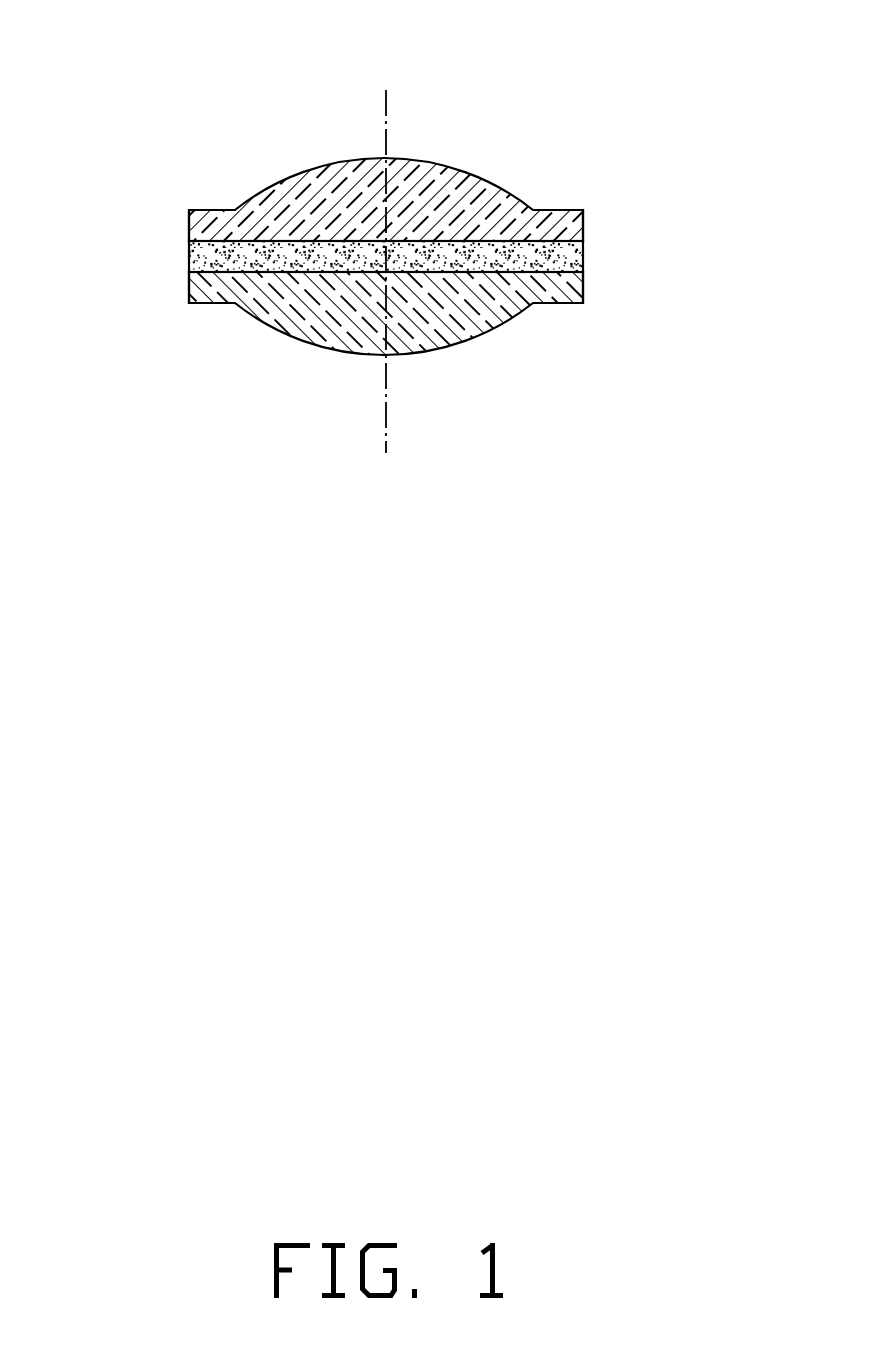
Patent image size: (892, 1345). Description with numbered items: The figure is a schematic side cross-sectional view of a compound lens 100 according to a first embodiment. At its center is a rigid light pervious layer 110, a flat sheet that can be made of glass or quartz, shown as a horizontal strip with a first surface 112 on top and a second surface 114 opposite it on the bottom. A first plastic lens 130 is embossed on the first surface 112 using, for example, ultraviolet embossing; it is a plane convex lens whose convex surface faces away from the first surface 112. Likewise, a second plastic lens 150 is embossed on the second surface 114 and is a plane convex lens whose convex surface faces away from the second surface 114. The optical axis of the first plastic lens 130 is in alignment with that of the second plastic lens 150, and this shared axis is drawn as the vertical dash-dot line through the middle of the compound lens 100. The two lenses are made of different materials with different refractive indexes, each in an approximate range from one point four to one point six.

The compound lens 100 is at (409, 226).
The light pervious layer 110 is at (210, 265).
The first surface 112 is at (538, 240).
The second surface 114 is at (538, 273).
The first plastic lens 130 is at (311, 185).
The second plastic lens 150 is at (303, 325).